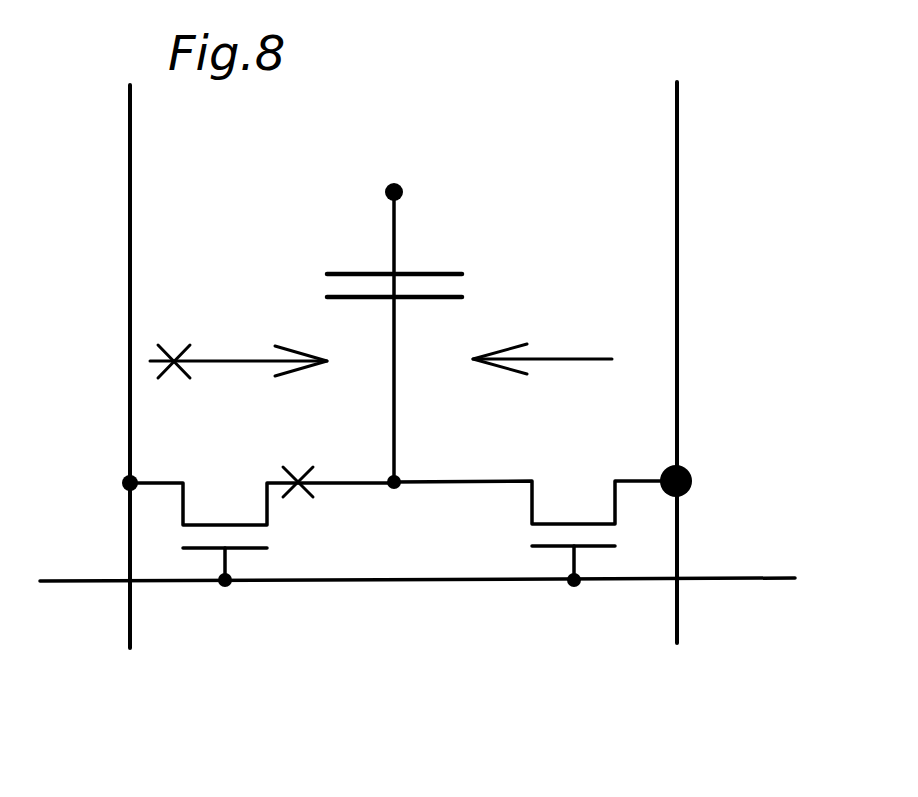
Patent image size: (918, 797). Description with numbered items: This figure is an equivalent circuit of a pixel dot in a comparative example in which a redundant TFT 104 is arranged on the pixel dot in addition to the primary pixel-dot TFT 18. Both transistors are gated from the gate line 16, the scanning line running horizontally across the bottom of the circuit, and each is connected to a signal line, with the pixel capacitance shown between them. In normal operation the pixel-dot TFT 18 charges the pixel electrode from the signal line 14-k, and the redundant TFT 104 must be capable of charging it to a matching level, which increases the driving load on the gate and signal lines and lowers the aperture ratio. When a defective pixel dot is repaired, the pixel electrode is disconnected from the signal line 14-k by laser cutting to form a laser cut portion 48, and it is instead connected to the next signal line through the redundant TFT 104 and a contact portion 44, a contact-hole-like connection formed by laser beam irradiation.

The signal line 14-k is at (130, 135).
The gate line 16 is at (422, 582).
The pixel-dot TFT 18 is at (245, 565).
The redundant TFT 104 is at (600, 562).
The laser cut portion 48 is at (320, 498).
The contact portion 44 is at (690, 468).